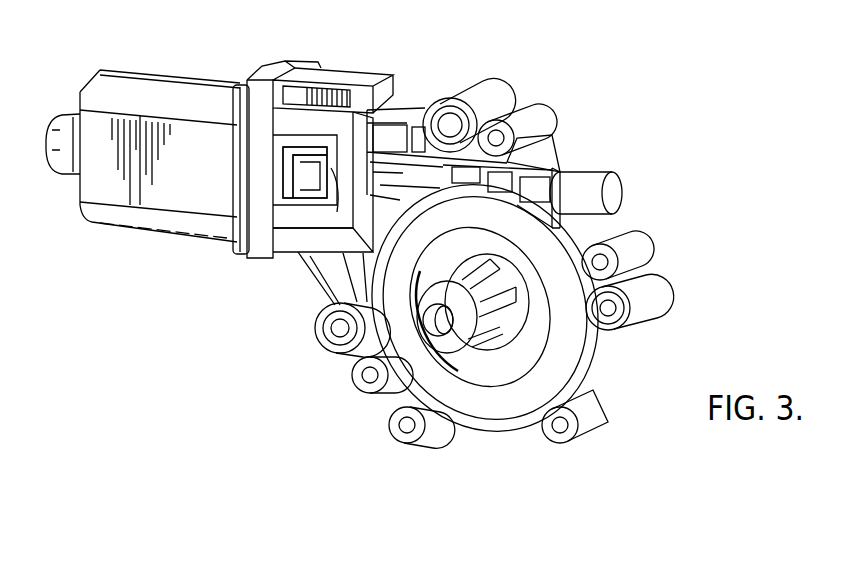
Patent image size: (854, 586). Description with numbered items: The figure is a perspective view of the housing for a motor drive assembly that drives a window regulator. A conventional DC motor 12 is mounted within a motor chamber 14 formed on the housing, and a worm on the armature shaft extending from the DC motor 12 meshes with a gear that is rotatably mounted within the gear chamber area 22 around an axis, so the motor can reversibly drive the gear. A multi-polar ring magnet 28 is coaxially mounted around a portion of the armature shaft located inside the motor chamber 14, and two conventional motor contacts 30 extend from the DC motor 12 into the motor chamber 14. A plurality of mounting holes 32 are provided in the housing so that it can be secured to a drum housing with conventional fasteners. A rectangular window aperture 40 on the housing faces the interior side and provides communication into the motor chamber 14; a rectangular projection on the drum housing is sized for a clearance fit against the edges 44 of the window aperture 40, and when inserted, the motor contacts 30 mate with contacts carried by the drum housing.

The DC motor 12 is at (138, 228).
The motor chamber 14 is at (345, 90).
The gear chamber area 22 is at (505, 433).
The multi-polar ring magnet 28 is at (313, 169).
The motor contacts 30 is at (276, 152).
The mounting holes 32 is at (449, 118).
The window aperture 40 is at (285, 176).
The edges of window aperture 44 is at (337, 212).